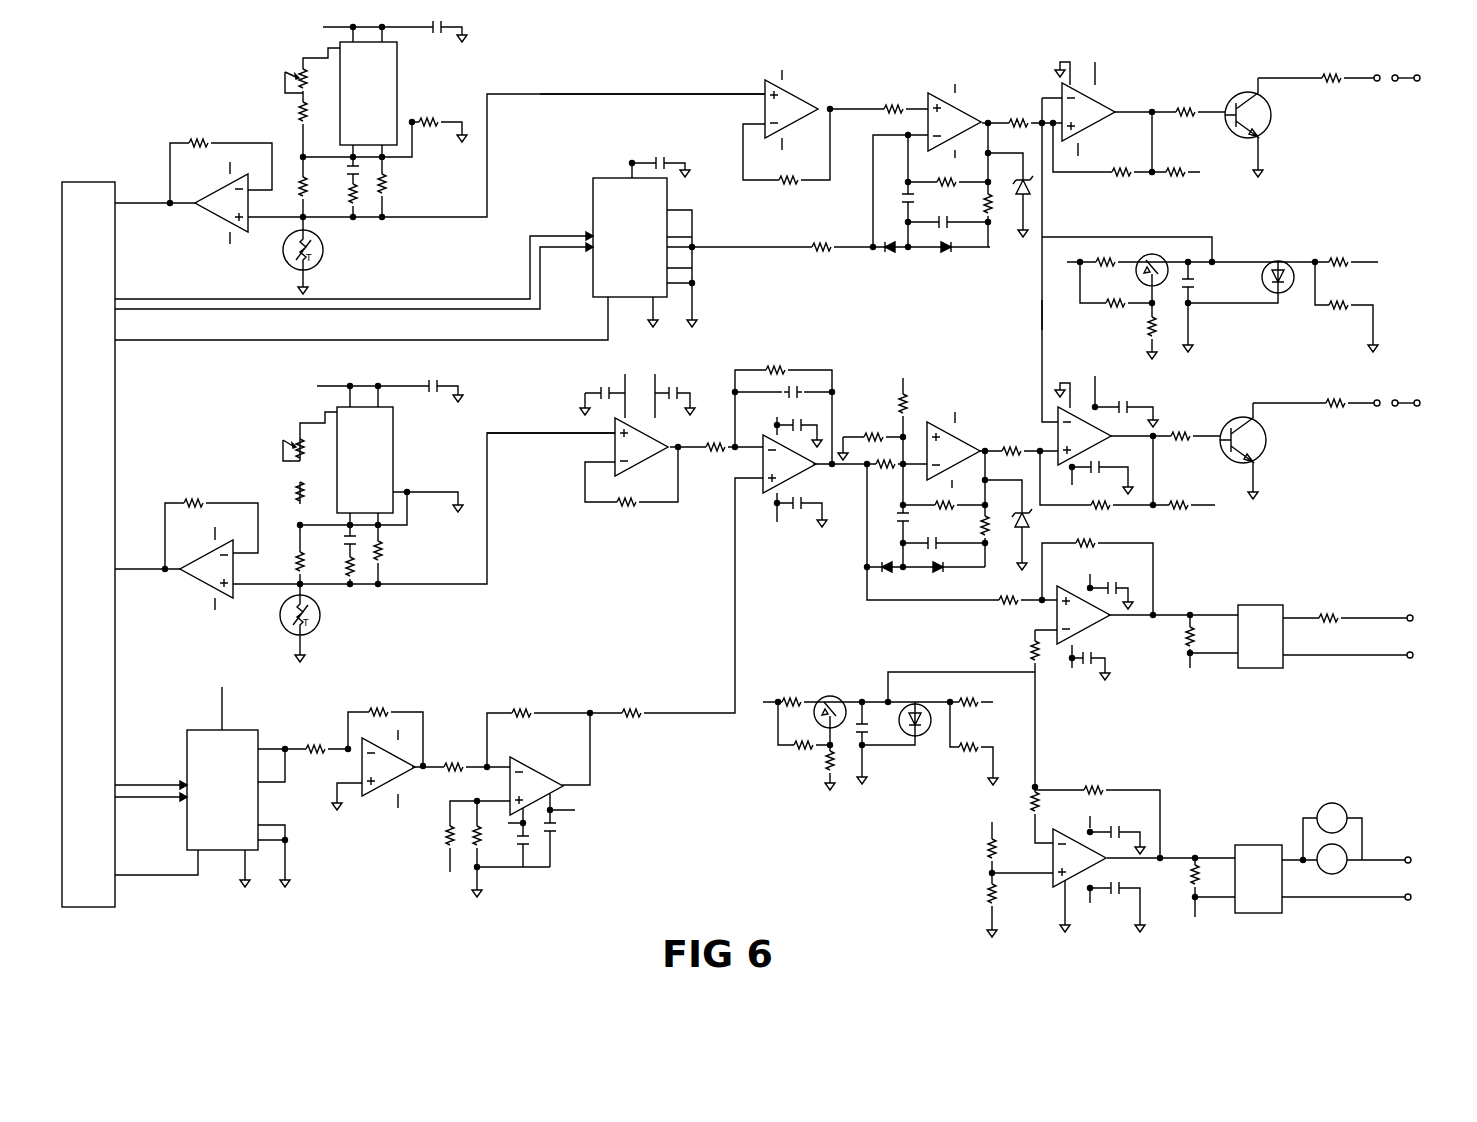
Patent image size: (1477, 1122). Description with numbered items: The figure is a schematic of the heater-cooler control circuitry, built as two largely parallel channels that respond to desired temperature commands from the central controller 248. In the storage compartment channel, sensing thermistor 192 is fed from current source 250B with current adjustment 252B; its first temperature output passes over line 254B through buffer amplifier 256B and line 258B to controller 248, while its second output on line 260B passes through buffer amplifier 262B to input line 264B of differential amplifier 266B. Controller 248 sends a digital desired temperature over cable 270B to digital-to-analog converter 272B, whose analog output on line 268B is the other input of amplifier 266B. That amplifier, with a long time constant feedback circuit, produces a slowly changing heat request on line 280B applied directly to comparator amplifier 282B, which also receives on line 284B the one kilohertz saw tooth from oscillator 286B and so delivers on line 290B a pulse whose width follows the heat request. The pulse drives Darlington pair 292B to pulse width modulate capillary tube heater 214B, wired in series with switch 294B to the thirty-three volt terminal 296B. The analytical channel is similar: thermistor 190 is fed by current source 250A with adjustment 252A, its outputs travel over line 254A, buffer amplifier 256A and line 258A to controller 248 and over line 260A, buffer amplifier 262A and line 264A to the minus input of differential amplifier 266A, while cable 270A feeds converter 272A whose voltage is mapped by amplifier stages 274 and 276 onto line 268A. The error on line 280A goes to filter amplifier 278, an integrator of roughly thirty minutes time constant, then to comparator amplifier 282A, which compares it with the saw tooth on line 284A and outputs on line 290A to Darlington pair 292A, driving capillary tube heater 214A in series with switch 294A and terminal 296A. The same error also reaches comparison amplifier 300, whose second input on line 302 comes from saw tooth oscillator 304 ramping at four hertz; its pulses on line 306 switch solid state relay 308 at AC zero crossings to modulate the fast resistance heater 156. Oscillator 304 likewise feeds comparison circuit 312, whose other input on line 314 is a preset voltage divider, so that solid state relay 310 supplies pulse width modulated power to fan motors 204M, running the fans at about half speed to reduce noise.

The central controller 248 is at (100, 182).
The current source 250B is at (399, 83).
The current adjustment 252B is at (297, 77).
The line 254B is at (280, 226).
The buffer amplifier 256B is at (200, 214).
The line 258B is at (155, 203).
The sensing thermistor 192 is at (323, 250).
The cable 270B is at (166, 299).
The digital-to-analog converter 272B is at (593, 200).
The line 268B is at (780, 231).
The line 260B is at (567, 94).
The buffer amplifier 262B is at (792, 86).
The input line 264B is at (855, 108).
The differential amplifier 266B is at (968, 118).
The line 280B is at (993, 114).
The comparator amplifier 282B is at (1100, 100).
The line 284B is at (1044, 170).
The oscillator 286B is at (1218, 239).
The line 290B is at (1135, 117).
The Darlington pair 292B is at (1232, 100).
The switch 294B is at (1378, 76).
The terminal 296B is at (1418, 82).
The capillary tube heater 214B is at (1337, 88).
The line 284A is at (1042, 315).
The current source 250A is at (395, 448).
The current adjustment 252A is at (294, 438).
The line 254A is at (272, 590).
The buffer amplifier 256A is at (197, 582).
The line 258A is at (148, 568).
The sensing thermistor 190 is at (320, 615).
The cable 270A is at (155, 785).
The digital-to-analog converter 272A is at (247, 730).
The amplifier stage 274 is at (361, 800).
The amplifier stage 276 is at (516, 760).
The line 268A is at (607, 713).
The line 260A is at (521, 433).
The buffer amplifier 262A is at (615, 447).
The input line 264A is at (681, 450).
The differential amplifier 266A is at (768, 484).
The line 280A is at (864, 472).
The filter amplifier 278 is at (975, 441).
The comparator amplifier 282A is at (1113, 431).
The line 290A is at (1157, 445).
The Darlington pair 292A is at (1242, 418).
The switch 294A is at (1378, 401).
The terminal 296A is at (1414, 408).
The capillary tube heater 214A is at (1338, 412).
The saw tooth oscillator 304 is at (813, 690).
The line 302 is at (1036, 632).
The comparison amplifier 300 is at (1057, 613).
The line 306 is at (1161, 615).
The solid state relay 308 is at (1256, 605).
The heater 156 is at (1328, 610).
The solid state relay 310 is at (1245, 845).
The comparison circuit 312 is at (1052, 881).
The line 314 is at (1051, 873).
The fan motor 204M is at (1344, 806).